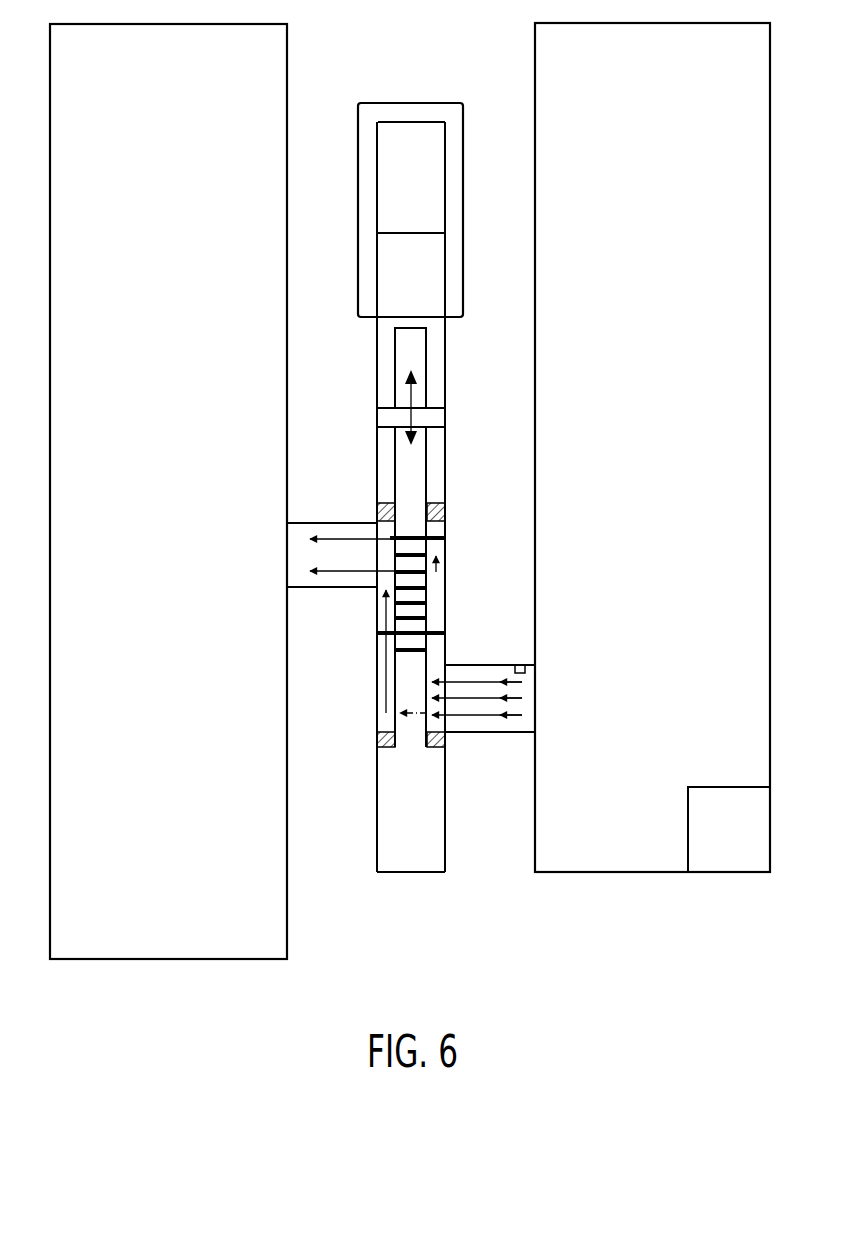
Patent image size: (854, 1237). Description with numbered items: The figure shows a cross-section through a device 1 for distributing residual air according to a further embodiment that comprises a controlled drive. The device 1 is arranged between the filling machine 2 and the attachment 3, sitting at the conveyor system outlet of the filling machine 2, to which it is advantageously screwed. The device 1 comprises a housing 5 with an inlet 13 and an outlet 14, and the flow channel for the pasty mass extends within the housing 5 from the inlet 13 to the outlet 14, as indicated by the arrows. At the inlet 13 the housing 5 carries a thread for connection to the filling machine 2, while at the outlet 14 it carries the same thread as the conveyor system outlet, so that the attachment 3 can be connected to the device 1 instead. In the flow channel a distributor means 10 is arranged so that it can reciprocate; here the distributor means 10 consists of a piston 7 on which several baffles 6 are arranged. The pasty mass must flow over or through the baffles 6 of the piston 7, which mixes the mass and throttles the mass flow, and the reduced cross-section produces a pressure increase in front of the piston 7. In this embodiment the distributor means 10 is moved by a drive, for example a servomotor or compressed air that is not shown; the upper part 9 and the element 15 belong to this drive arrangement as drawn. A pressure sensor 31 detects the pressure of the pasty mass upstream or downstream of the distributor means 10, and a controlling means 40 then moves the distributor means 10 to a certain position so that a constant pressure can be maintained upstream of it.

The device for distributing residual air 1 is at (481, 81).
The filling machine 2 is at (661, 411).
The attachment 3 is at (176, 411).
The housing 5 is at (489, 735).
The baffles 6 is at (428, 600).
The piston 7 is at (420, 480).
The head 9 is at (463, 136).
The distributor means 10 is at (452, 637).
The inlet 13 is at (537, 696).
The outlet 14 is at (283, 565).
The piston 15 is at (420, 223).
The pressure sensor 31 is at (520, 664).
The controlling means 40 is at (743, 845).